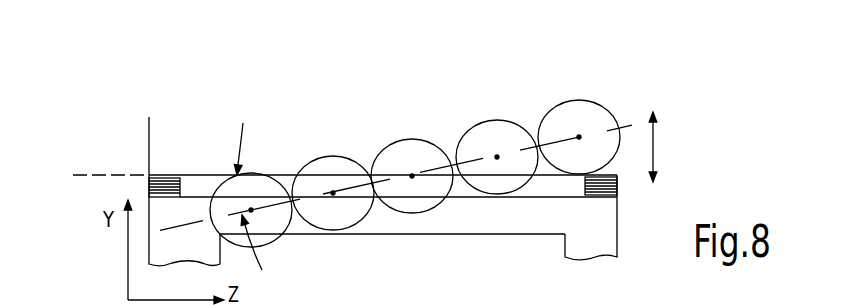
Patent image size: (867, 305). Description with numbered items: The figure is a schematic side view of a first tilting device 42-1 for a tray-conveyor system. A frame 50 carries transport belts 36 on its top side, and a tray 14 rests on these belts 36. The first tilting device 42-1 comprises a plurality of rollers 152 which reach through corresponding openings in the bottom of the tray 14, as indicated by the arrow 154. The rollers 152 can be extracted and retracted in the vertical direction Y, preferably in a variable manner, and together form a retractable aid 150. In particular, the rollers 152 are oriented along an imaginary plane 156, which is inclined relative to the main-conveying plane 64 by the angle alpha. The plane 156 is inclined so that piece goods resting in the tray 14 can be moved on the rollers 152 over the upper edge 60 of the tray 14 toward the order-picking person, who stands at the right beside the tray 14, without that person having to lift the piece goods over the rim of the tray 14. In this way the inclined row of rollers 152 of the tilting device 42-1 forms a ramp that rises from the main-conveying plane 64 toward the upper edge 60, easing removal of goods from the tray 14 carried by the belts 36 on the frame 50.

The tray 14 is at (158, 128).
The main-conveying plane 64 is at (110, 174).
The frame 50 is at (450, 234).
The transport belt 36 is at (618, 188).
The retractable aid 150 is at (291, 146).
The imaginary plane 156 is at (435, 167).
The roller 152 is at (567, 100).
The first tilting device 42-1 is at (454, 115).
The upper edge 60 is at (640, 88).
The arrow 154 is at (658, 150).